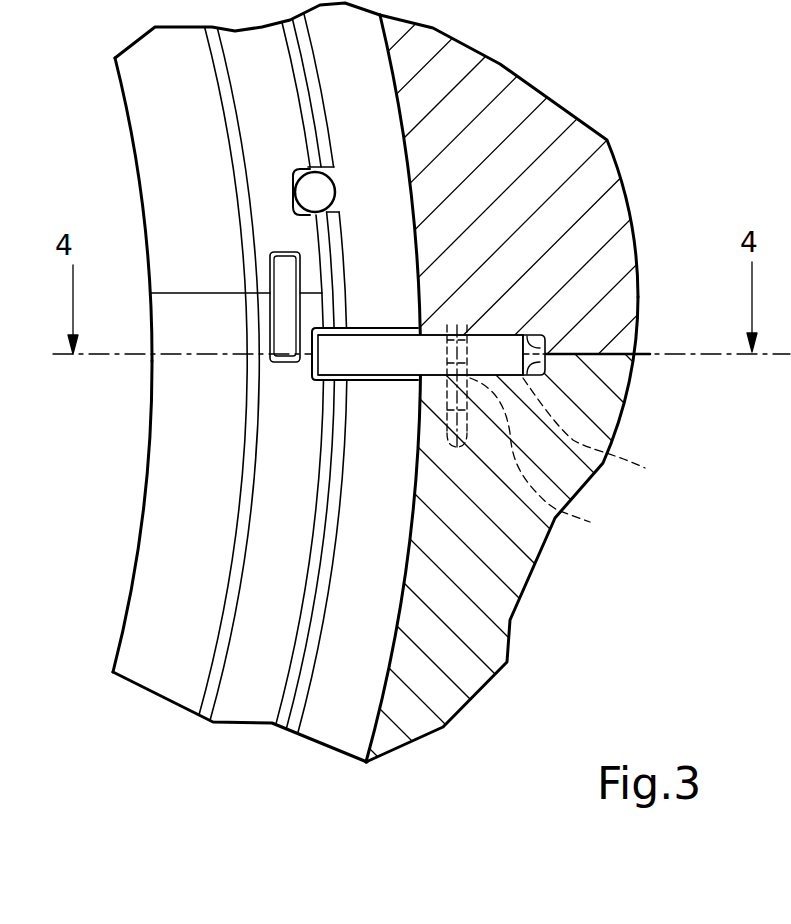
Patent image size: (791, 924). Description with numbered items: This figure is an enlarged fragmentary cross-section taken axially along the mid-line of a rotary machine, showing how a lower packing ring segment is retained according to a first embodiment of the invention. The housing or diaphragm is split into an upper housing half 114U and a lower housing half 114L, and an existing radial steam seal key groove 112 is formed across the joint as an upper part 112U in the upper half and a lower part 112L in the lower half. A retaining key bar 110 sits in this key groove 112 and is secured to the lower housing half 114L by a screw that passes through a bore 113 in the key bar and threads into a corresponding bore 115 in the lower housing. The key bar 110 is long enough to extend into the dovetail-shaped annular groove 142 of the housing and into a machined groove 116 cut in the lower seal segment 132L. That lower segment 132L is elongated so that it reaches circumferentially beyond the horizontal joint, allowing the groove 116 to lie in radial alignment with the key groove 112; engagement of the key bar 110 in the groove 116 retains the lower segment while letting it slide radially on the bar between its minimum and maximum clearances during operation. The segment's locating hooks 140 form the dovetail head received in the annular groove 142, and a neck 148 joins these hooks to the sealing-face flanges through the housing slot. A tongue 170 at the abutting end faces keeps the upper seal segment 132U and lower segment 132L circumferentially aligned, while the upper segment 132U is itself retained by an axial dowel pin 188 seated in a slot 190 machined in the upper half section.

The retaining key bar 110 is at (500, 340).
The radial steam seal key groove 112 is at (562, 363).
The upper part of radial steam seal key groove 112U is at (512, 333).
The lower part of radial steam seal key groove 112L is at (545, 365).
The bore 113 is at (561, 404).
The upper housing half 114U is at (520, 103).
The lower housing half 114L is at (503, 568).
The bore 115 is at (550, 459).
The machined groove 116 is at (340, 372).
The upper seal segment 132U is at (155, 92).
The lower seal segment 132L is at (162, 583).
The locating hooks 140 is at (285, 705).
The annular groove 142 is at (347, 730).
The neck 148 is at (230, 703).
The tongue 170 is at (287, 270).
The axial dowel pin 188 is at (317, 197).
The slot or groove 190 is at (307, 163).